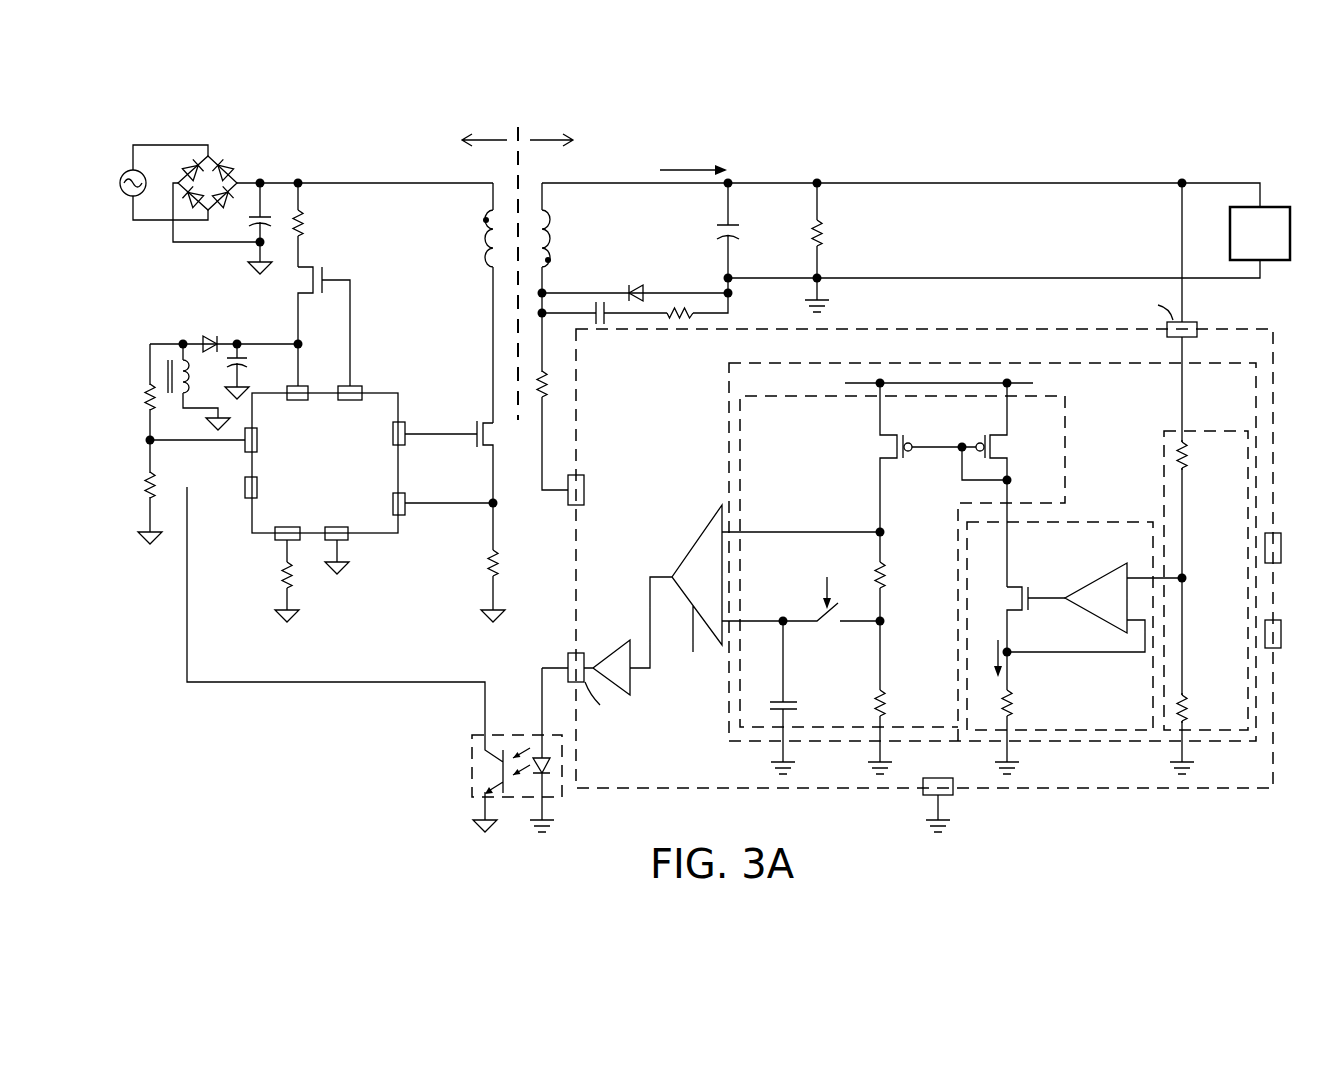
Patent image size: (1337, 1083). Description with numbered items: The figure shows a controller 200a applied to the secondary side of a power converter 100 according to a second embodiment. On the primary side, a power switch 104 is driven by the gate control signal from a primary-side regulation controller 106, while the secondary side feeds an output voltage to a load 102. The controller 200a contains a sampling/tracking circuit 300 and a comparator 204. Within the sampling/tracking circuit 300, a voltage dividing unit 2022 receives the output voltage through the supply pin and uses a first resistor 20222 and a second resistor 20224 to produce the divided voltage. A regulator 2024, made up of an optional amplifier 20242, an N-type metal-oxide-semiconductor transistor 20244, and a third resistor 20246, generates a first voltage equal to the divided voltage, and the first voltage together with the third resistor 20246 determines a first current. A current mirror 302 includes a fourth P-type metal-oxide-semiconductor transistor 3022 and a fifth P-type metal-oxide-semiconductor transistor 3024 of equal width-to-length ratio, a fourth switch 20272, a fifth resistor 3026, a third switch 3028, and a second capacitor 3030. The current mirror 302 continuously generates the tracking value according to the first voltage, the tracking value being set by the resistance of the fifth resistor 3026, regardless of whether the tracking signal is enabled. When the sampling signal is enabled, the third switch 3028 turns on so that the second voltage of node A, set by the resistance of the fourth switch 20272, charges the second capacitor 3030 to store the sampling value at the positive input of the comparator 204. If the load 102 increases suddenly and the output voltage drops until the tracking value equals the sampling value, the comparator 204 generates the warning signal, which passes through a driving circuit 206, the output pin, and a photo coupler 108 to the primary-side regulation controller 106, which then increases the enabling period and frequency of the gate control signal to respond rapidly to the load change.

The power converter 100 is at (1155, 138).
The load 102 is at (1292, 228).
The power switch 104 is at (497, 432).
The primary-side regulation controller 106 is at (377, 537).
The photo coupler 108 is at (472, 766).
The controller 200a is at (1275, 336).
The comparator 204 is at (697, 541).
The driving circuit 206 is at (618, 649).
The sampling/tracking circuit 300 is at (729, 440).
The current mirror 302 is at (1065, 447).
The voltage dividing unit 2022 is at (1213, 432).
The regulator 2024 is at (1125, 521).
The fourth P-type metal-oxide-semiconductor transistor 3022 is at (1001, 446).
The fifth P-type metal-oxide-semiconductor transistor 3024 is at (878, 446).
The fifth resistor 3026 is at (884, 577).
The third switch 3028 is at (825, 628).
The second capacitor 3030 is at (807, 700).
The first resistor 20222 is at (1192, 455).
The second resistor 20224 is at (1192, 702).
The optional amplifier 20242 is at (1106, 571).
The N-type metal-oxide-semiconductor transistor 20244 is at (1022, 588).
The third resistor 20246 is at (1012, 703).
The fourth switch 20272 is at (881, 710).